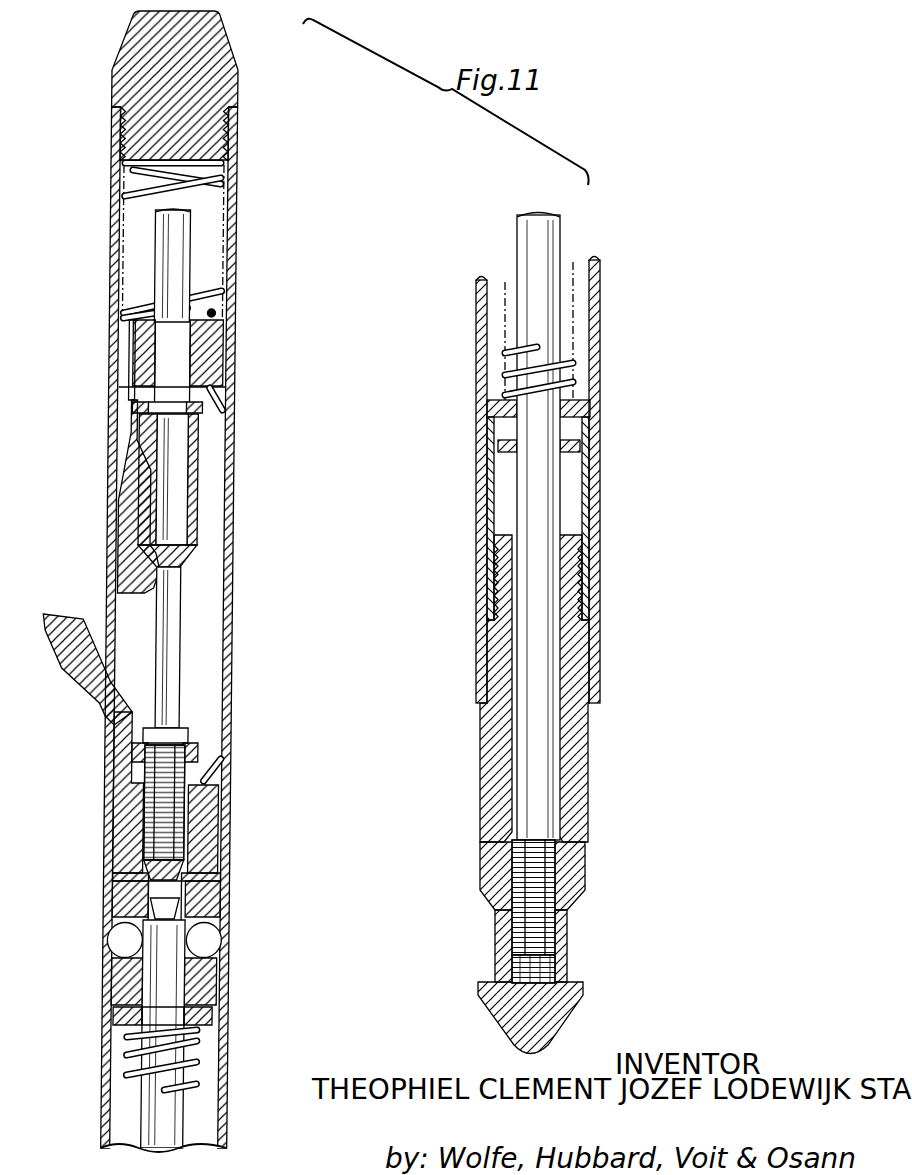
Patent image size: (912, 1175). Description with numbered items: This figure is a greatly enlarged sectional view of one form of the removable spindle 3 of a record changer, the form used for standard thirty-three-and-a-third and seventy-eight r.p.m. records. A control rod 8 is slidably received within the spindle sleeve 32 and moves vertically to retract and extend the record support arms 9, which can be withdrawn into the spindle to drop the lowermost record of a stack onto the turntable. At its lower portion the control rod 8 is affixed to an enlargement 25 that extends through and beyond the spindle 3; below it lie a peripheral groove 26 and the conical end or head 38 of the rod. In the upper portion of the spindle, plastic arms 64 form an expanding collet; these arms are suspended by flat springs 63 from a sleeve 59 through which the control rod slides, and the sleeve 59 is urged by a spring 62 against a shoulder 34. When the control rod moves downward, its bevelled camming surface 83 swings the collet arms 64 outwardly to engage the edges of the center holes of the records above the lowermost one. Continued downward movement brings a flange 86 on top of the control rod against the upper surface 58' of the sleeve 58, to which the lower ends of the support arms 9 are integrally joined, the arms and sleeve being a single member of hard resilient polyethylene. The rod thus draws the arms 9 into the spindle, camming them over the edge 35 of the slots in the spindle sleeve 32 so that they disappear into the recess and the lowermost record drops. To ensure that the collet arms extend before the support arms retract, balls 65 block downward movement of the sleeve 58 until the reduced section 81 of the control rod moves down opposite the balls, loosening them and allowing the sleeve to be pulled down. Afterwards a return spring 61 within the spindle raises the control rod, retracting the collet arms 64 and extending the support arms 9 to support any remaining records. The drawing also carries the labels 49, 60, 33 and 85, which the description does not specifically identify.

The spindle 3 is at (114, 970).
The control rod 8 is at (193, 1126).
The record support arms 9 is at (58, 653).
The enlargement 25 is at (587, 860).
The peripheral groove 26 is at (570, 937).
The conical end or head 38 is at (572, 1012).
The pin 49 is at (226, 394).
The sleeve 58 is at (197, 833).
The upper surface of sleeve 58' is at (246, 792).
The sleeve 59 is at (223, 353).
The cap 60 is at (231, 47).
The return spring 61 is at (209, 1085).
The spring 62 is at (162, 301).
The flat springs 63 is at (134, 400).
The plastic arms 64 is at (122, 582).
The balls 65 is at (220, 941).
The spindle sleeve 32 is at (232, 695).
The tubular body 33 is at (592, 703).
The shoulder 34 is at (207, 408).
The edge of slots 35 is at (109, 719).
The reduced section 81 is at (184, 908).
The bevelled camming surface 83 is at (190, 560).
The plunger 85 is at (195, 257).
The flange 86 is at (205, 752).